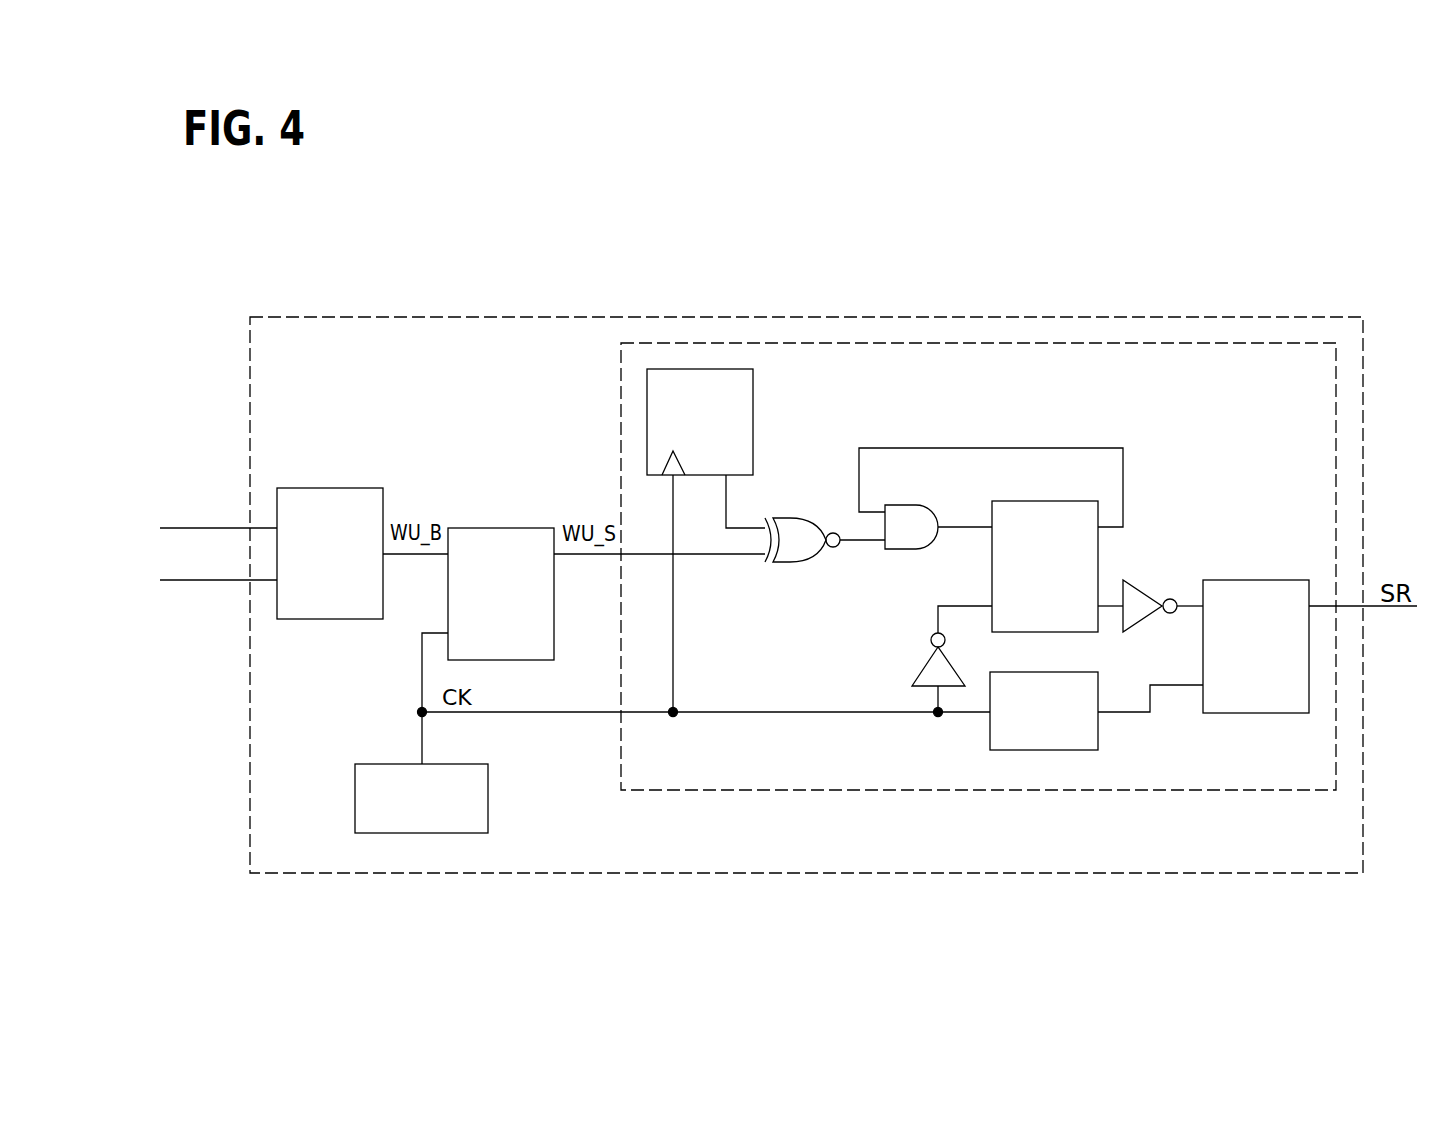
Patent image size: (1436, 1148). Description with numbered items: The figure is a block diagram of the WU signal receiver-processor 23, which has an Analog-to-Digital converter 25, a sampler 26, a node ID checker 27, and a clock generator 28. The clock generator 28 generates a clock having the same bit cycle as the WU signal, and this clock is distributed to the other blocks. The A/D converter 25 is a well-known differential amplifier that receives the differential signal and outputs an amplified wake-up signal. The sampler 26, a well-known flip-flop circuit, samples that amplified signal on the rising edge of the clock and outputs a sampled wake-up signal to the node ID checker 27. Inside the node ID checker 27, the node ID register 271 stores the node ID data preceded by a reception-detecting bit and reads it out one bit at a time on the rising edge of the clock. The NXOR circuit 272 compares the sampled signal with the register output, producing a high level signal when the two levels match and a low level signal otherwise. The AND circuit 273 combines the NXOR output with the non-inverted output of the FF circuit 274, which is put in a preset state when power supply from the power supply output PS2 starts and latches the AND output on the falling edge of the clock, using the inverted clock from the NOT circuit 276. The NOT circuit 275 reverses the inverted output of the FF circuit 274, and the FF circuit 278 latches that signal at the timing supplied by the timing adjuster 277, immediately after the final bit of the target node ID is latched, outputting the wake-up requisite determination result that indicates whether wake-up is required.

The WU signal receiver-processor 23 is at (809, 316).
The A/D converter 25 is at (306, 488).
The sampler 26 is at (477, 527).
The node ID checker 27 is at (617, 376).
The clock generator 28 is at (384, 763).
The node ID register 271 is at (753, 385).
The NXOR circuit 272 is at (785, 563).
The AND circuit 273 is at (905, 550).
The FF circuit 274 is at (1020, 501).
The NOT circuit 275 is at (1139, 586).
The NOT circuit 276 is at (922, 672).
The timing adjuster 277 is at (990, 736).
The FF circuit 278 is at (1233, 579).
The power supply output PS2 is at (409, 305).